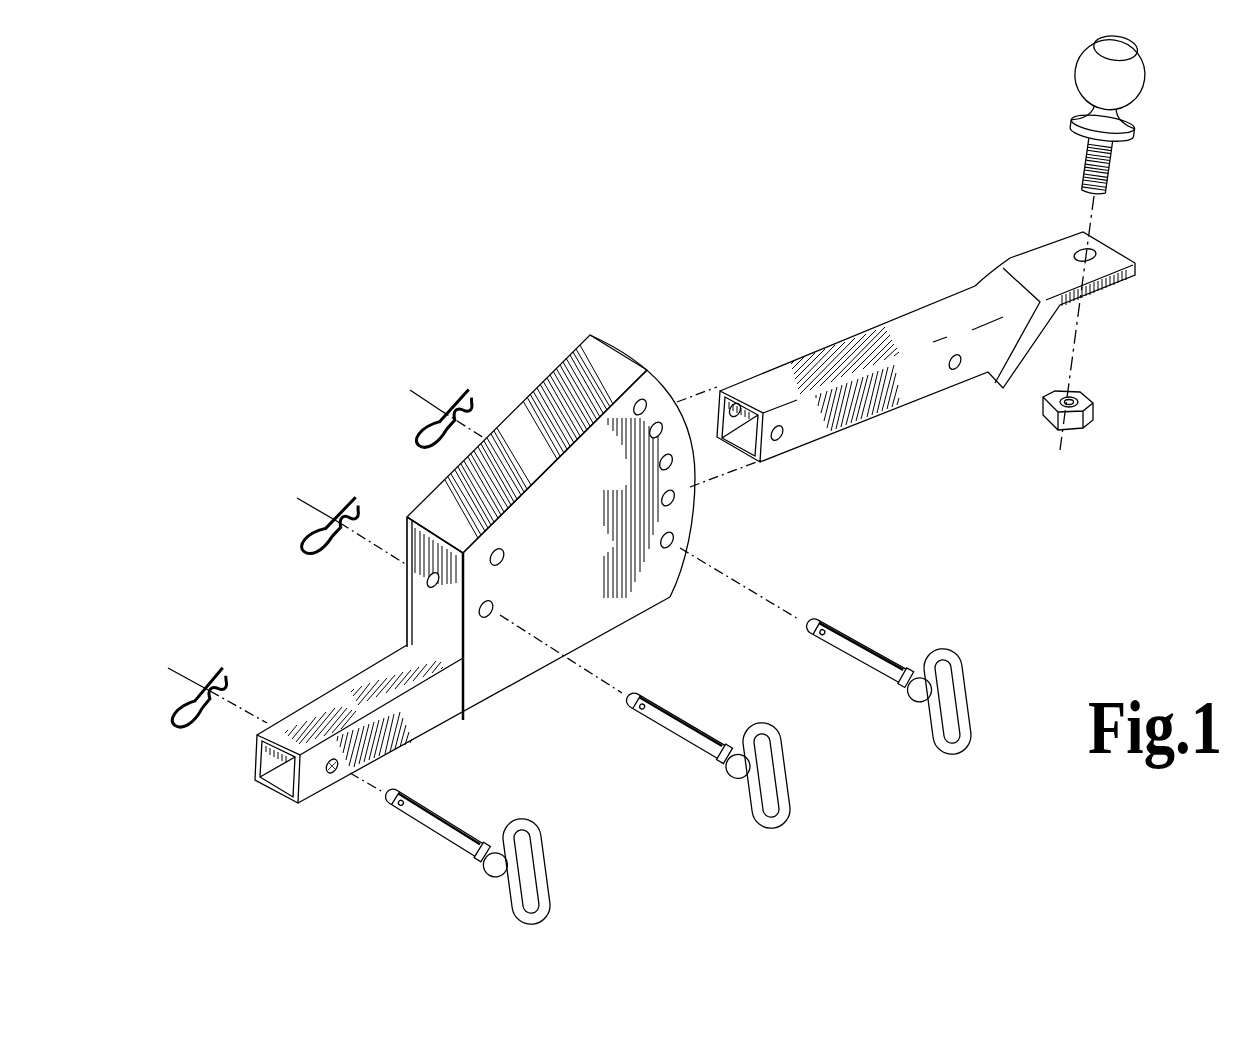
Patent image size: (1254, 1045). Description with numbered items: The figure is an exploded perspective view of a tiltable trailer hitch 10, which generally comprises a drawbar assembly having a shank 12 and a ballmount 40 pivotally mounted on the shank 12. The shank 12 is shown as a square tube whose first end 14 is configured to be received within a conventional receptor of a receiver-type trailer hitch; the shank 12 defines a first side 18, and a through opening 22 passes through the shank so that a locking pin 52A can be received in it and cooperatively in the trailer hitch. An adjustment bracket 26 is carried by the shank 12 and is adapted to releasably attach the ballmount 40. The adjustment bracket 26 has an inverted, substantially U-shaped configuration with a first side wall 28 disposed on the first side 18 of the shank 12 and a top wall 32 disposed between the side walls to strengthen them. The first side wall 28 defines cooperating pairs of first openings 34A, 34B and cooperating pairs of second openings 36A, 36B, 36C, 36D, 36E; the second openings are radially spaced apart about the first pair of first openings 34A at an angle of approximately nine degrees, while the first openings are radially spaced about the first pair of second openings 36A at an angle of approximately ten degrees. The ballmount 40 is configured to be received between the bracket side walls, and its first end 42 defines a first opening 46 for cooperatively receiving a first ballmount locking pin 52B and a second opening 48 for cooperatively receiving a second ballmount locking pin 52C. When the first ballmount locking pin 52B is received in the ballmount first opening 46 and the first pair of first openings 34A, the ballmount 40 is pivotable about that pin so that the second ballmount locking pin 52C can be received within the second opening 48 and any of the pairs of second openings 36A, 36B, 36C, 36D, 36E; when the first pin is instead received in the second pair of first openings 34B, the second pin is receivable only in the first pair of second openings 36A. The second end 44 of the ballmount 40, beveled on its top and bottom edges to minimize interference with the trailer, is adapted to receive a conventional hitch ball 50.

The hitch 10 is at (556, 292).
The shank 12 is at (428, 740).
The first end 14 is at (256, 760).
The first side 18 is at (445, 714).
The through opening 22 is at (334, 774).
The adjustment bracket 26 is at (522, 408).
The first side wall 28 is at (607, 476).
The top wall 32 is at (565, 368).
The first cooperating pair of first openings 34A is at (488, 616).
The second cooperating pair of first openings 34B is at (504, 558).
The first cooperating pair of second openings 36A is at (673, 547).
The second opening 36B is at (676, 500).
The second opening 36C is at (674, 464).
The second opening 36D is at (658, 424).
The second opening 36E is at (641, 400).
The ballmount 40 is at (893, 323).
The first end 42 is at (775, 456).
The second end 44 is at (1123, 275).
The first opening 46 is at (781, 441).
The second opening 48 is at (957, 371).
The hitch ball 50 is at (1130, 68).
The locking pin 52A is at (538, 825).
The first ballmount locking pin 52B is at (770, 727).
The second ballmount locking pin 52C is at (950, 655).